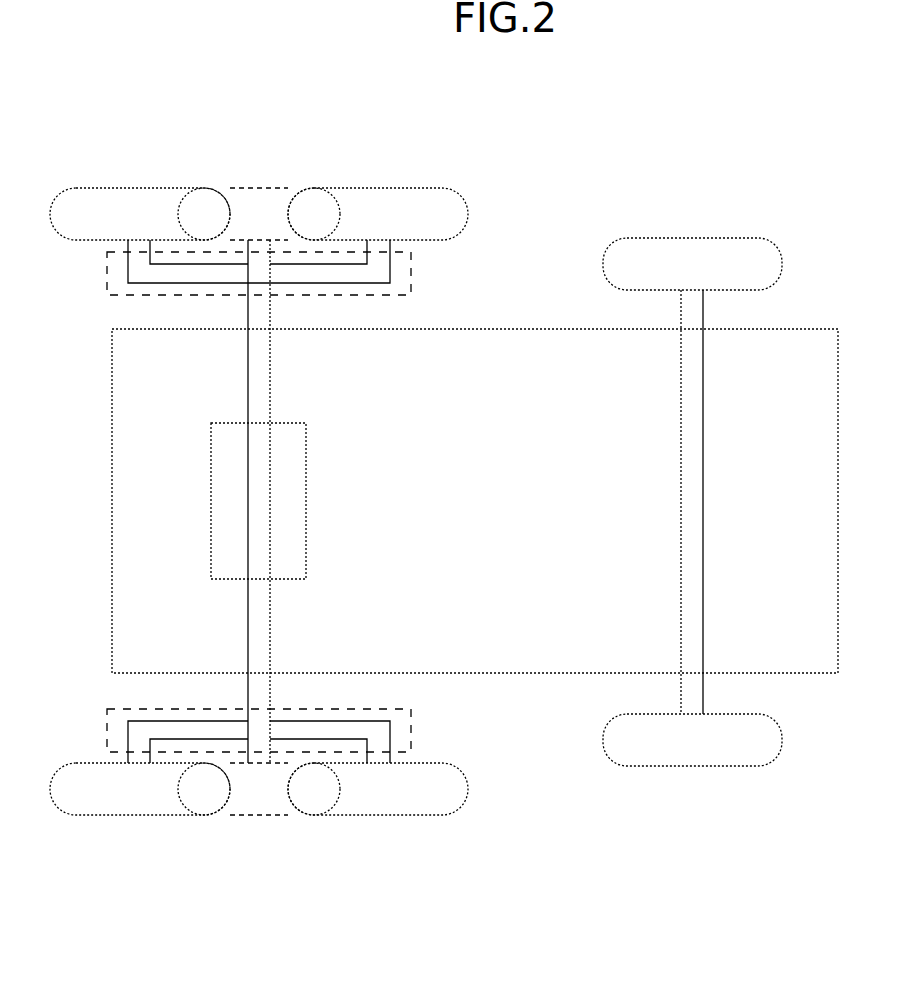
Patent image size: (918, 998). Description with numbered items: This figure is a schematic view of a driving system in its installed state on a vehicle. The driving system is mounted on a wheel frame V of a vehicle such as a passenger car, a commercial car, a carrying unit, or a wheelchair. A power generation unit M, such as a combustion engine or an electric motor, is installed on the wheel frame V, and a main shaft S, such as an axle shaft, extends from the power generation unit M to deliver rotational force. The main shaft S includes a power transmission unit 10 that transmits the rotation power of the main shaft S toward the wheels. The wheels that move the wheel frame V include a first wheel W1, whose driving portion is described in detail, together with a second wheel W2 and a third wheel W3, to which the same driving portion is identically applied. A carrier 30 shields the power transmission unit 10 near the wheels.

The power transmission unit 10 is at (300, 415).
The carrier 30 is at (116, 276).
The first wheel W1 is at (108, 210).
The second wheel W2 is at (256, 205).
The third wheel W3 is at (398, 207).
The power generation unit M is at (228, 507).
The main shaft S is at (255, 625).
The wheel frame V is at (798, 329).